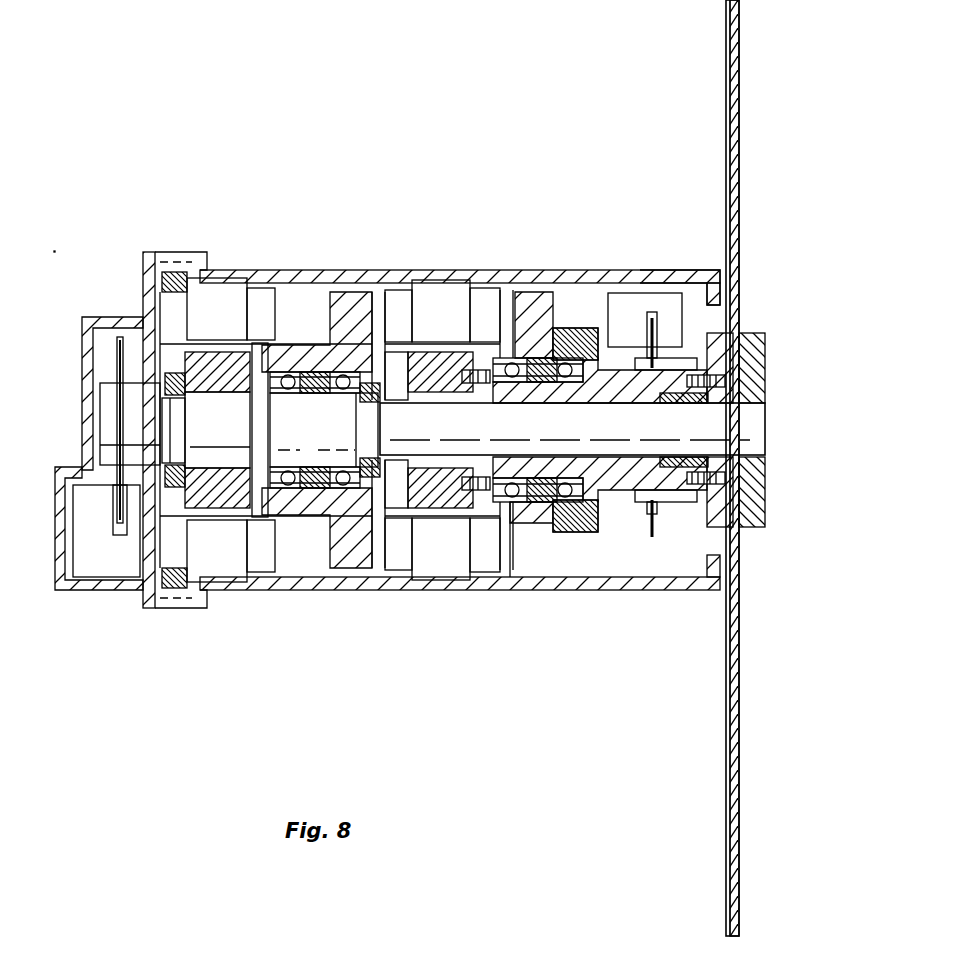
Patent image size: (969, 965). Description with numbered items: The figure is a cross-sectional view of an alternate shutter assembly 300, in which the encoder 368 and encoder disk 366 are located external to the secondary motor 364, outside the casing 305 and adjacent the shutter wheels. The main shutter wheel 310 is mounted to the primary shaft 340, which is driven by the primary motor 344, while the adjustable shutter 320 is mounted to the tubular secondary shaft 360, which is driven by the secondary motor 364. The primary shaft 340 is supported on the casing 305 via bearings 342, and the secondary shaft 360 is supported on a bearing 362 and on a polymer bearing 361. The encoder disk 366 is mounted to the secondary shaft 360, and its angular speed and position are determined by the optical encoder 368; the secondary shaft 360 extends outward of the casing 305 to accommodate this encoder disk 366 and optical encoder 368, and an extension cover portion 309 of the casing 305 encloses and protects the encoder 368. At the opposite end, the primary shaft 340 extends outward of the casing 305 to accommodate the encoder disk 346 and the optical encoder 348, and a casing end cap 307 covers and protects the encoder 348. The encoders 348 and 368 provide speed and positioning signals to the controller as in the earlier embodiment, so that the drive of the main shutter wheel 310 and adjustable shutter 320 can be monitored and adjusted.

The shutter assembly 300 is at (66, 228).
The casing 305 is at (276, 588).
The casing end cap 307 is at (100, 588).
The extension cover portion 309 is at (669, 281).
The main shutter wheel 310 is at (741, 710).
The adjustable shutter 320 is at (727, 745).
The primary shaft 340 is at (543, 437).
The bearings 342 is at (298, 486).
The primary motor 344 is at (216, 290).
The encoder disk 346 is at (118, 354).
The optical encoder 348 is at (93, 560).
The secondary shaft 360 is at (622, 487).
The polymer bearing 361 is at (655, 383).
The bearing 362 is at (545, 356).
The secondary motor 364 is at (452, 290).
The encoder disk 366 is at (652, 514).
The optical encoder 368 is at (662, 300).